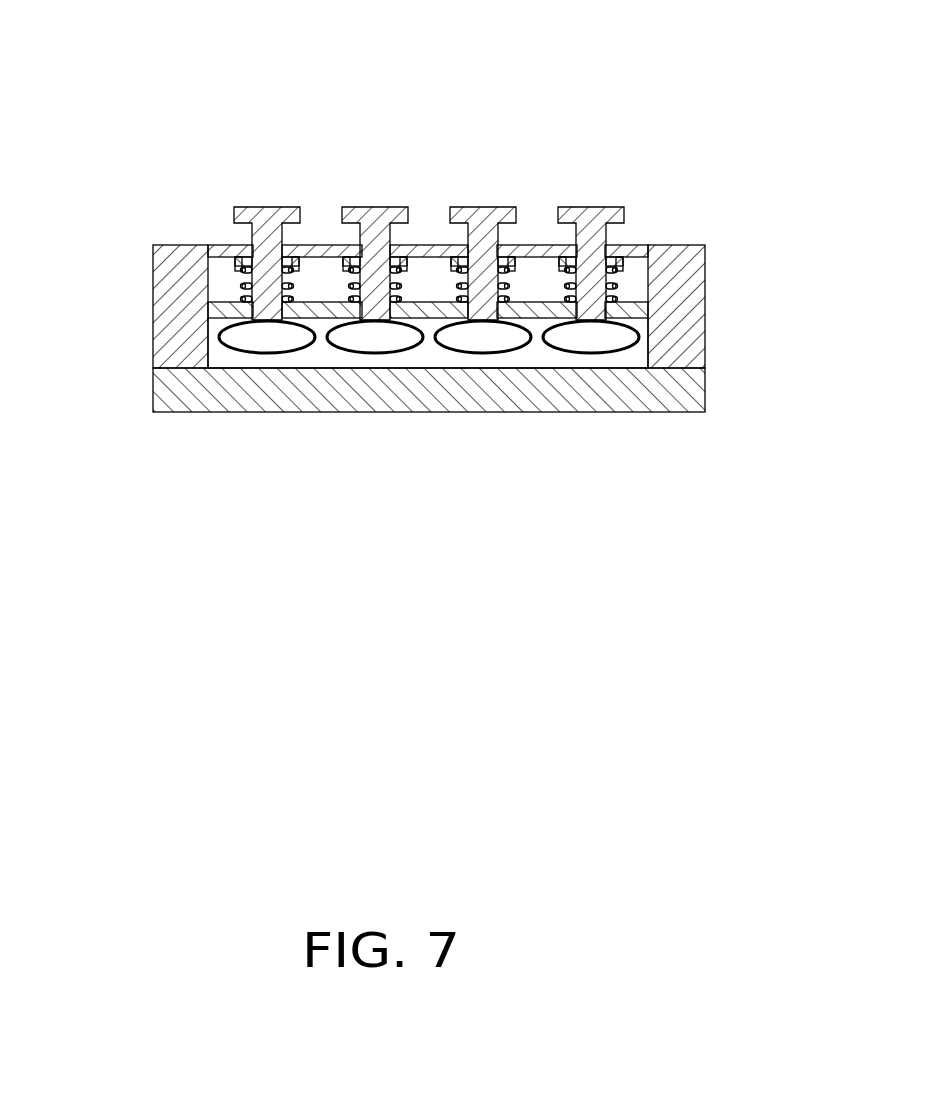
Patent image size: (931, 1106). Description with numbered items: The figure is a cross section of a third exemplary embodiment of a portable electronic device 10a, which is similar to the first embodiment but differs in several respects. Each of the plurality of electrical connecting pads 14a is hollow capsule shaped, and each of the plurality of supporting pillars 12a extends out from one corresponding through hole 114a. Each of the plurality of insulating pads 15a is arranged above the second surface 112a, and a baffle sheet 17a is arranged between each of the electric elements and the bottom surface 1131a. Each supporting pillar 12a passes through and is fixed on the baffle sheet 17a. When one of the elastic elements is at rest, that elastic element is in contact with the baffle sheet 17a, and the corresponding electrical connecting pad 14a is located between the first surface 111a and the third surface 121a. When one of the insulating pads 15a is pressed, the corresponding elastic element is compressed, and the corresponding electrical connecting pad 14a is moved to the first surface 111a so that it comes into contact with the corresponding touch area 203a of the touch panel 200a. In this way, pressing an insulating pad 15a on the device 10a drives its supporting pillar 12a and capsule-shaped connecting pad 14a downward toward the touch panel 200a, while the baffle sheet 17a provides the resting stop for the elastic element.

The portable electronic device 10a is at (408, 52).
The supporting pillar 12a is at (368, 287).
The electrical connecting pad 14a is at (589, 341).
The insulating pad 15a is at (590, 220).
The baffle sheet 17a is at (620, 264).
The first surface 111a is at (176, 373).
The second surface 112a is at (656, 242).
The through hole 114a is at (467, 252).
The third surface 121a is at (429, 324).
The touch panel 200a is at (217, 388).
The touch area 203a is at (230, 360).
The bottom surface 1131a is at (536, 262).